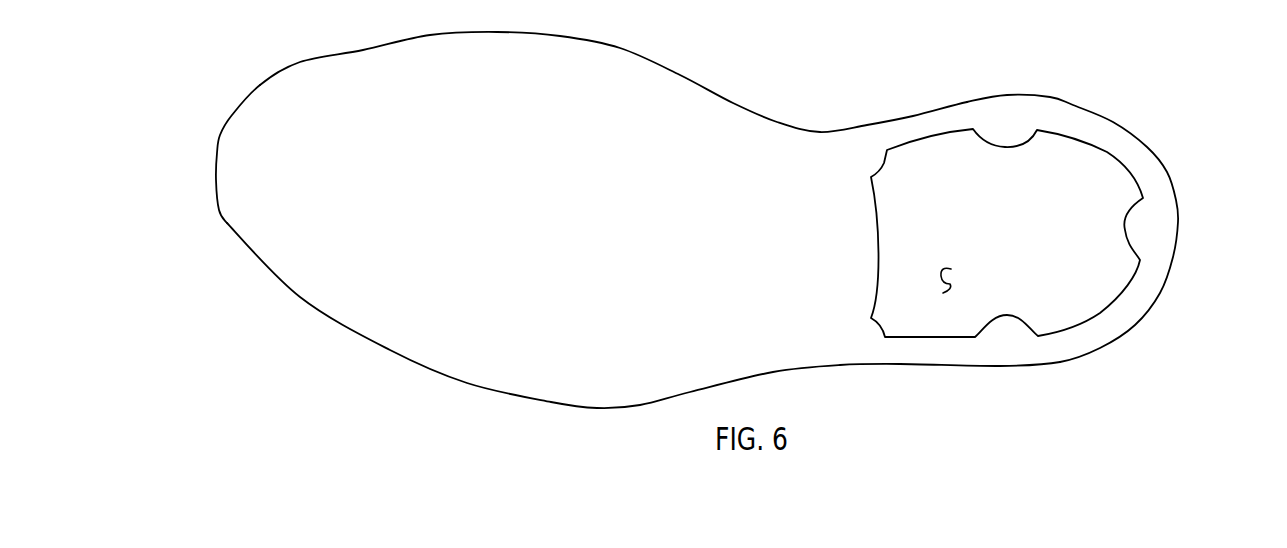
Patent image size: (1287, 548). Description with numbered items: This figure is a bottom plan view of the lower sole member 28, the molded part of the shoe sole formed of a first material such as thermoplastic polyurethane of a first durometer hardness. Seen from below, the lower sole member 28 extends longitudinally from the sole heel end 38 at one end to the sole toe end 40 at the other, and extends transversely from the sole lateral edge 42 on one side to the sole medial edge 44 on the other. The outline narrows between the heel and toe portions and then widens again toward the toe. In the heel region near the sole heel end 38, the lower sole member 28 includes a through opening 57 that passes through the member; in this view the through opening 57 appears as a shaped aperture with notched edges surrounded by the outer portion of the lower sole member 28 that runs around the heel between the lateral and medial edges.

The lower sole member 28 is at (704, 243).
The sole heel end 38 is at (1174, 258).
The sole toe end 40 is at (216, 178).
The sole lateral edge 42 is at (551, 402).
The sole medial edge 44 is at (782, 120).
The through opening 57 is at (952, 282).